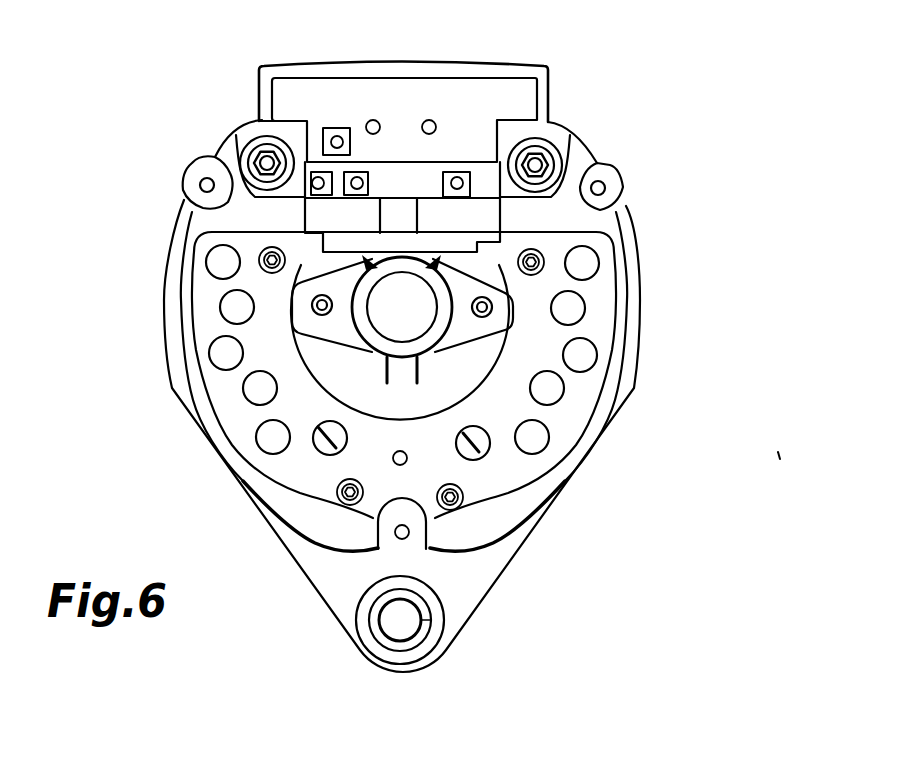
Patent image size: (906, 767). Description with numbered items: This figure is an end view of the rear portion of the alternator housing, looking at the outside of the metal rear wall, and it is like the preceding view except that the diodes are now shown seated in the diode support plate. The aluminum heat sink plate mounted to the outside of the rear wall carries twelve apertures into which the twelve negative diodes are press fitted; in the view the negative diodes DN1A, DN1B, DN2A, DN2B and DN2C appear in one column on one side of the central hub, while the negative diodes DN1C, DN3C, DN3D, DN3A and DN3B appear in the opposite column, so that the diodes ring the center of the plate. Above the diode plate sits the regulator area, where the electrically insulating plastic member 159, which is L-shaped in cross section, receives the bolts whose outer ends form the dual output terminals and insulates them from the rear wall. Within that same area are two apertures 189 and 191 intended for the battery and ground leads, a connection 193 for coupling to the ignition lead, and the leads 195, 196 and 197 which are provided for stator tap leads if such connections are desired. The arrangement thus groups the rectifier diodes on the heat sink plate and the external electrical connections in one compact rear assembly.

The plastic member 159 is at (546, 148).
The aperture 189 is at (431, 119).
The aperture 191 is at (372, 119).
The connection 193 is at (333, 131).
The lead 195 is at (316, 177).
The lead 196 is at (362, 181).
The regulator terminal 197 is at (458, 176).
The negative diode DN1A is at (582, 263).
The negative diode DN1B is at (568, 308).
The negative diode DN1C is at (230, 306).
The negative diode DN2A is at (580, 355).
The negative diode DN2B is at (548, 390).
The negative diode DN2C is at (532, 438).
The negative diode DN3A is at (272, 437).
The negative diode DN3B is at (327, 449).
The negative diode DN3C is at (226, 353).
The negative diode DN3D is at (258, 388).